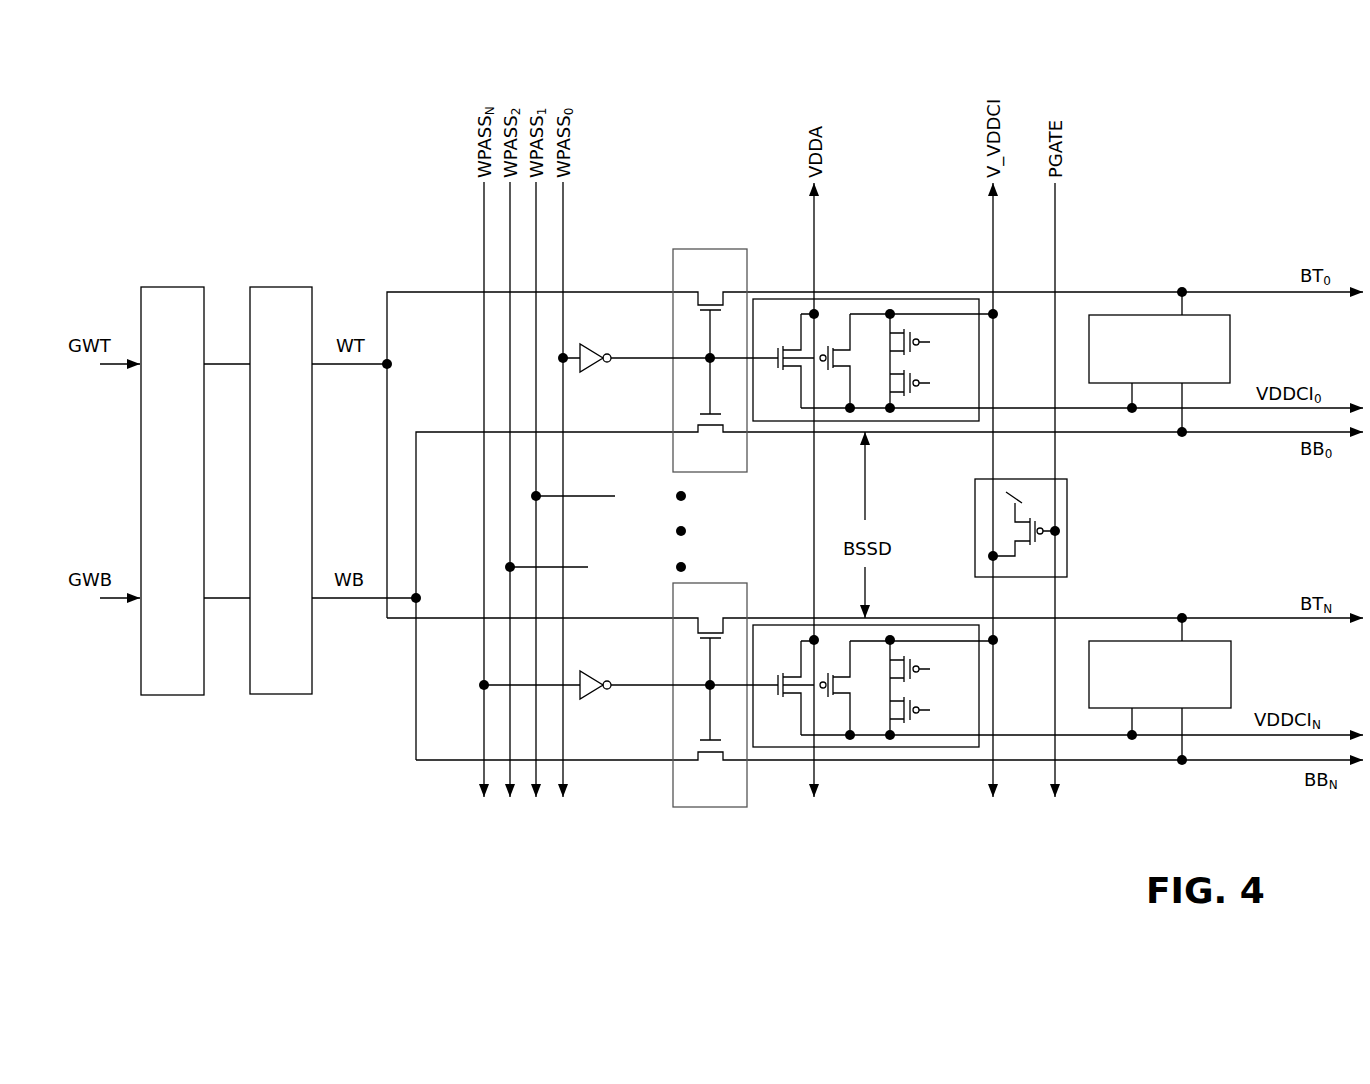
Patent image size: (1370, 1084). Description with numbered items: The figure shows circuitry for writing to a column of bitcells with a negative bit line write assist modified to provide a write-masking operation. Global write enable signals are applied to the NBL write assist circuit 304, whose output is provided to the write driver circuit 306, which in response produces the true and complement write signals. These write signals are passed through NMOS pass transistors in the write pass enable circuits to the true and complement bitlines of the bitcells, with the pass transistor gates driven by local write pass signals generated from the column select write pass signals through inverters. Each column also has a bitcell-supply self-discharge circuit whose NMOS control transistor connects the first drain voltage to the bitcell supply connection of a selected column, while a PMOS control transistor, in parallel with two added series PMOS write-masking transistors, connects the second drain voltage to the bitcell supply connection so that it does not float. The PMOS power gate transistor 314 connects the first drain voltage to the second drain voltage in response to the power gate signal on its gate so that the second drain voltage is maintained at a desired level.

The negative bit line (NBL) write assist circuit 304 is at (160, 285).
The write driver circuit 306 is at (268, 285).
The power gate (PG) transistor 314 is at (1067, 524).